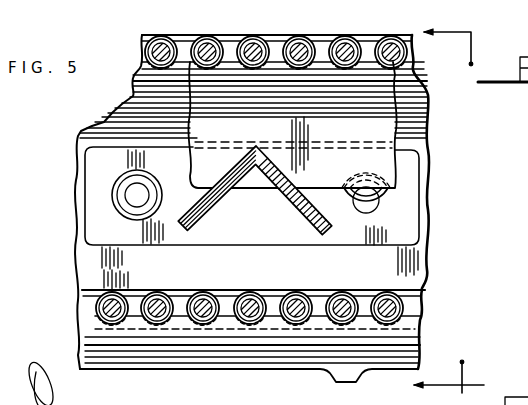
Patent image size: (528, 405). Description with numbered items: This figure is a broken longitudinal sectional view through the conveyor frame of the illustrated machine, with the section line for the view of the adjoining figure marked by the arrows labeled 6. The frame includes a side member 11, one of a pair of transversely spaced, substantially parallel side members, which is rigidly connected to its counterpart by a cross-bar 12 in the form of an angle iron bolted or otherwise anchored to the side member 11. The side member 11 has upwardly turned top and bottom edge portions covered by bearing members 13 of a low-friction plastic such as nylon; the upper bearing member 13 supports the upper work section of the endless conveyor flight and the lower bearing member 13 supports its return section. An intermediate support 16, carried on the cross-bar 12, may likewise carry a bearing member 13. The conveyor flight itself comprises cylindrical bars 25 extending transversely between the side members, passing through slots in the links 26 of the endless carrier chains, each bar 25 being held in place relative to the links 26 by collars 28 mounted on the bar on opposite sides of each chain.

The side member 11 is at (422, 233).
The cross-bar 12 is at (288, 207).
The bearing member 13 is at (157, 65).
The intermediate support 16 is at (384, 163).
The bar 25 is at (399, 62).
The link 26 is at (411, 41).
The collar 28 is at (401, 57).
The section line 6- 6 is at (452, 211).